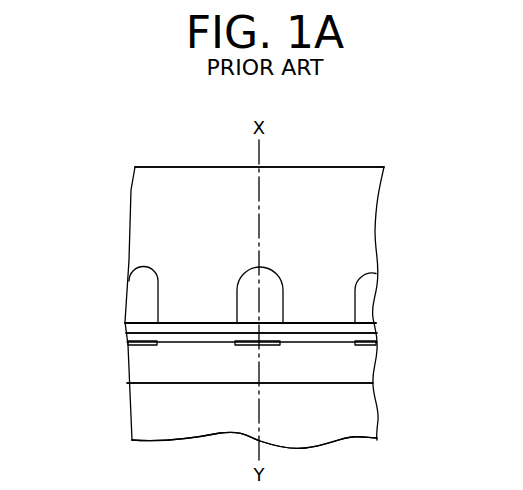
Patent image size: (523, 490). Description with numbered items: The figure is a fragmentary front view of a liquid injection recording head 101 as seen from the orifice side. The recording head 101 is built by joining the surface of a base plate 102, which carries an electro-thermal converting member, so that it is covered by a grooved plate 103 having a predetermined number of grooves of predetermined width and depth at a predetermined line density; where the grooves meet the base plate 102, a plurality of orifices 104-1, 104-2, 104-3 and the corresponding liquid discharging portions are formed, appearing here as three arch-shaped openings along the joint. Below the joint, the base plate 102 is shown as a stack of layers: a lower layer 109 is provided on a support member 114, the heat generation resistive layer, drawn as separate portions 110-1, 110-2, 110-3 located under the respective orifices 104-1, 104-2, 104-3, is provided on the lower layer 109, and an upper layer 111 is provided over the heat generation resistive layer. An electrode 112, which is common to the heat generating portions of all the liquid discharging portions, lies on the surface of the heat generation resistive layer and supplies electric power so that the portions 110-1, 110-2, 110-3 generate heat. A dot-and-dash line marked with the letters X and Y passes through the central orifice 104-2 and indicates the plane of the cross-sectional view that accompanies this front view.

The recording head 101 is at (130, 210).
The base plate 102 is at (127, 324).
The grooved plate 103 is at (340, 181).
The orifice 104-1 is at (145, 288).
The orifice 104-2 is at (275, 290).
The orifice 104-3 is at (370, 292).
The lower layer 109 is at (358, 370).
The heat generation resistive layer 110-1 is at (152, 346).
The heat generation resistive layer 110-2 is at (265, 344).
The heat generation resistive layer 110-3 is at (365, 347).
The upper layer 111 is at (362, 330).
The electrode 112 is at (367, 338).
The support member 114 is at (360, 423).